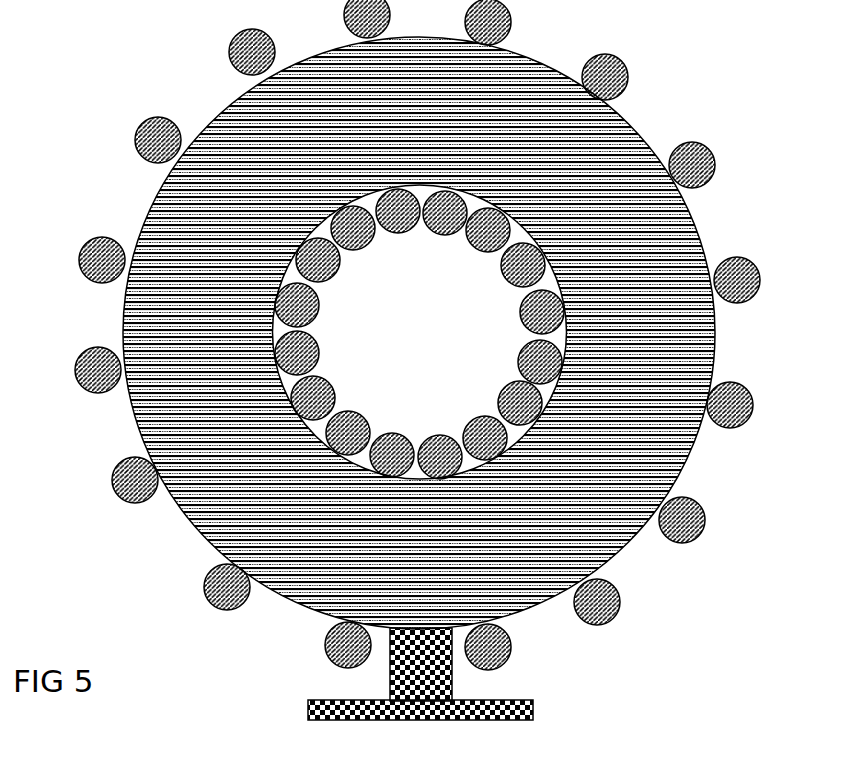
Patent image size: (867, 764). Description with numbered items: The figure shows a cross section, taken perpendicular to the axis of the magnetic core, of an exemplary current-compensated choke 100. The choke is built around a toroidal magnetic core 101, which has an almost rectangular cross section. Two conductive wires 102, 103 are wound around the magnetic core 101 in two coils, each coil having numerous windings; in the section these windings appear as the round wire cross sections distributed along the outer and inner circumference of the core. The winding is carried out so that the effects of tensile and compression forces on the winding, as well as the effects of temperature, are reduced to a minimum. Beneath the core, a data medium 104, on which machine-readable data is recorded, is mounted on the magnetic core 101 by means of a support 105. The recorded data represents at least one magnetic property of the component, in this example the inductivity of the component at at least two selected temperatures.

The current-compensated choke 100 is at (123, 577).
The toroidal magnetic core 101 is at (705, 336).
The wire 102 is at (145, 132).
The wire 103 is at (700, 172).
The data medium 104 is at (312, 712).
The support 105 is at (432, 684).